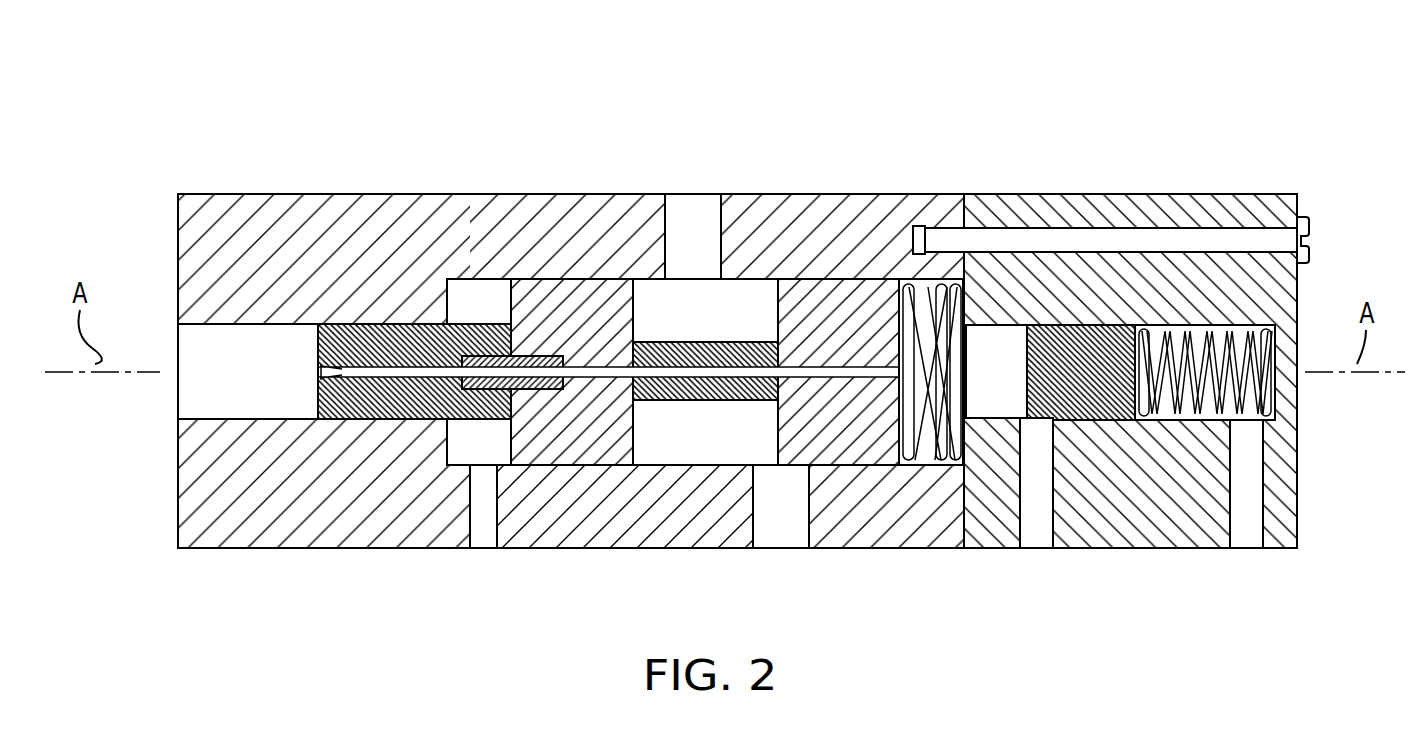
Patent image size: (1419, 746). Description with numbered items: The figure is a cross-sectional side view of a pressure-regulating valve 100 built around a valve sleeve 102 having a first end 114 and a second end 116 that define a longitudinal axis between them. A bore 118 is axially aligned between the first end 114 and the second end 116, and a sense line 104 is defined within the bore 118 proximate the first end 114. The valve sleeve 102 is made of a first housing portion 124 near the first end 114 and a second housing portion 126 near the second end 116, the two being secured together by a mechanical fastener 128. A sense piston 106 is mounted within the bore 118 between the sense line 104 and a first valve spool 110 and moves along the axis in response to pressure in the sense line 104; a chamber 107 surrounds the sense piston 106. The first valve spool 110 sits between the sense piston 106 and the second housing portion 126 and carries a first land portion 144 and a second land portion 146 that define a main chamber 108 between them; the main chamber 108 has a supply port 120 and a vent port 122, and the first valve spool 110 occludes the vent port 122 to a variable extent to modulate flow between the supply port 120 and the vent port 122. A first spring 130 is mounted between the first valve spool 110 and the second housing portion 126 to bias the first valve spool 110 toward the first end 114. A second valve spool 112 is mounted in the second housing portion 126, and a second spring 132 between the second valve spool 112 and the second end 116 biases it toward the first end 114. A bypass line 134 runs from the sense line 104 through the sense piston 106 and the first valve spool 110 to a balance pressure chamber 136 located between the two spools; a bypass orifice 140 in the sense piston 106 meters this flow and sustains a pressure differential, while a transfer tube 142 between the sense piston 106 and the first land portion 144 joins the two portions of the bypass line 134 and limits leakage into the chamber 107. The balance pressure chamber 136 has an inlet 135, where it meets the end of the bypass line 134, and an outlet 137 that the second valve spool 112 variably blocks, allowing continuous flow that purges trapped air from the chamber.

The pressure-regulating valve 100 is at (1045, 134).
The valve sleeve 102 is at (553, 194).
The sense line 104 is at (248, 398).
The sense piston 106 is at (345, 400).
The chamber 107 is at (468, 300).
The main chamber 108 is at (745, 300).
The first valve spool 110 is at (825, 300).
The second valve spool 112 is at (1100, 412).
The first end 114 is at (176, 240).
The second end 116 is at (1305, 306).
The bore 118 is at (158, 408).
The supply port 120 is at (697, 212).
The vent port 122 is at (770, 535).
The first housing portion 124 is at (393, 188).
The second housing portion 126 is at (1165, 194).
The mechanical fastener 128 is at (1312, 230).
The first spring 130 is at (935, 466).
The second spring 132 is at (1240, 396).
The bypass line 134 is at (588, 366).
The inlet 135 is at (915, 395).
The balance pressure chamber 136 is at (992, 358).
The outlet 137 is at (1030, 432).
The bypass orifice 140 is at (333, 366).
The transfer tube 142 is at (505, 386).
The first land portion 144 is at (565, 450).
The second land portion 146 is at (845, 445).